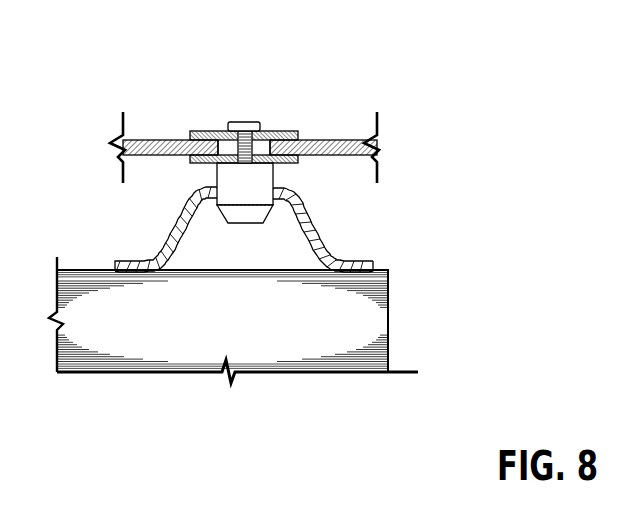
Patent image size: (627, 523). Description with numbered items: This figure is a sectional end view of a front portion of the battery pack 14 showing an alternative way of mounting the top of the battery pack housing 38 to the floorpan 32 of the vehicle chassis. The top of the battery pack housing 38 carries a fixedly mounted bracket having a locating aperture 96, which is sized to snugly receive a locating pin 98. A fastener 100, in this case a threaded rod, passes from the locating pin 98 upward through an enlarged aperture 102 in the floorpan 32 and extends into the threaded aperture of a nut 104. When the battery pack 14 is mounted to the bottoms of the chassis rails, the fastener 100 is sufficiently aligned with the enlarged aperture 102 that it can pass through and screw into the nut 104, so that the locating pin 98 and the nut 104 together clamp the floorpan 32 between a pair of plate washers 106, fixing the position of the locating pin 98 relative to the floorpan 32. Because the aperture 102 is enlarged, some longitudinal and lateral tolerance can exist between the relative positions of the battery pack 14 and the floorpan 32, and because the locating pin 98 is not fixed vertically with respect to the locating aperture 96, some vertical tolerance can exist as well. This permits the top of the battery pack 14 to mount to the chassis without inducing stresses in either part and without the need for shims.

The battery pack 14 is at (388, 295).
The battery pack housing 38 is at (388, 361).
The locating pin 98 is at (268, 218).
The locating aperture 96 is at (208, 186).
The floorpan 32 is at (338, 140).
The plate washers 106 is at (297, 133).
The enlarged aperture 102 is at (183, 141).
The fastener 100 is at (273, 131).
The nut 104 is at (237, 121).